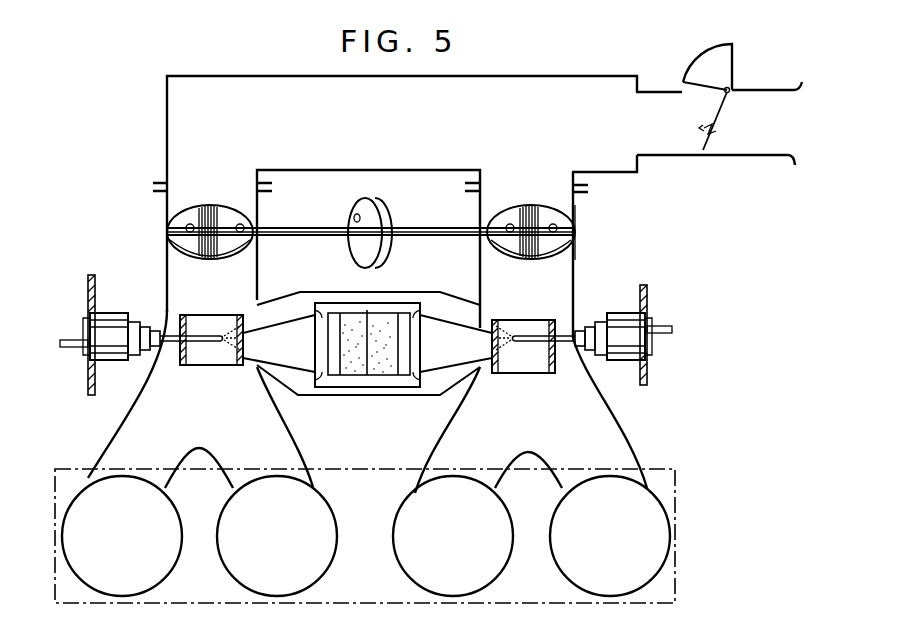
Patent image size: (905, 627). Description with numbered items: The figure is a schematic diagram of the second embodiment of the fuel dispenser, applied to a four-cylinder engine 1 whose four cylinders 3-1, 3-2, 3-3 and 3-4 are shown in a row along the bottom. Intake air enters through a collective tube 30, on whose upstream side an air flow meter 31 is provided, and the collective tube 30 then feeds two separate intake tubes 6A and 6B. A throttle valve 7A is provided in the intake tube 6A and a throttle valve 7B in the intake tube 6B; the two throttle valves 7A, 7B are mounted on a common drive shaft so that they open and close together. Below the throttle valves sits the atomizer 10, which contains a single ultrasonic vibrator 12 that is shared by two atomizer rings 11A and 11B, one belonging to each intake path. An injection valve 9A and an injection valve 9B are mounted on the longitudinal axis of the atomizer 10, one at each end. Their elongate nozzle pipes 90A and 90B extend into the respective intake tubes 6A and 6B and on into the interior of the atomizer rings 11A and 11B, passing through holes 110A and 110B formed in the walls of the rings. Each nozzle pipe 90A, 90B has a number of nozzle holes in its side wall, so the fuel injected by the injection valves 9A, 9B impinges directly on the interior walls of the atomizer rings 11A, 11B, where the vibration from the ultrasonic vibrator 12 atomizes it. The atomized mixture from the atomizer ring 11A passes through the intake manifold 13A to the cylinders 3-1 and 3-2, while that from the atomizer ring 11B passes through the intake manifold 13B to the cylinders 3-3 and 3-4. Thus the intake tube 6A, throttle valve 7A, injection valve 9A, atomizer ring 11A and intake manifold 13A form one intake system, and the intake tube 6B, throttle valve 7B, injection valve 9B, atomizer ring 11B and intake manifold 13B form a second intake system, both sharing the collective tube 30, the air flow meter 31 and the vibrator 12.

The vehicle body 1 is at (676, 505).
The cylinder 3-1 is at (137, 582).
The cylinder 3-2 is at (298, 582).
The cylinder 3-3 is at (470, 582).
The cylinder 3-4 is at (640, 580).
The intake tube 6A is at (166, 256).
The intake tube 6B is at (576, 250).
The throttle valve 7A is at (212, 205).
The throttle valve 7B is at (531, 205).
The injection valve 9A is at (84, 323).
The injection valve 9B is at (652, 350).
The atomizer 10 is at (389, 291).
The atomizer ring 11A is at (222, 366).
The atomizer ring 11B is at (492, 375).
The ultrasonic vibrator 12 is at (378, 377).
The intake manifold 13A is at (121, 411).
The intake manifold 13B is at (612, 427).
The collective tube 30 is at (167, 88).
The air flow meter 31 is at (684, 81).
The nozzle pipe 90A is at (203, 330).
The nozzle pipe 90B is at (530, 330).
The hole 110A is at (183, 343).
The hole 110B is at (552, 366).